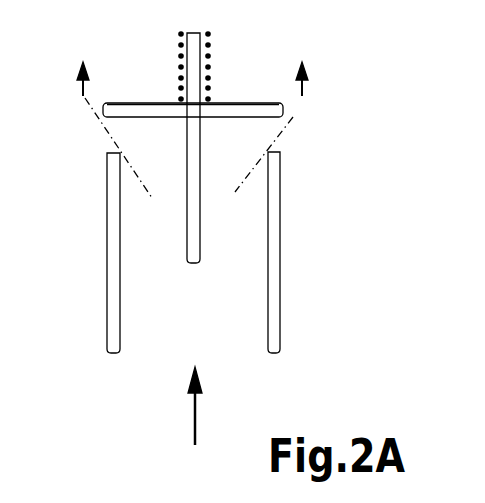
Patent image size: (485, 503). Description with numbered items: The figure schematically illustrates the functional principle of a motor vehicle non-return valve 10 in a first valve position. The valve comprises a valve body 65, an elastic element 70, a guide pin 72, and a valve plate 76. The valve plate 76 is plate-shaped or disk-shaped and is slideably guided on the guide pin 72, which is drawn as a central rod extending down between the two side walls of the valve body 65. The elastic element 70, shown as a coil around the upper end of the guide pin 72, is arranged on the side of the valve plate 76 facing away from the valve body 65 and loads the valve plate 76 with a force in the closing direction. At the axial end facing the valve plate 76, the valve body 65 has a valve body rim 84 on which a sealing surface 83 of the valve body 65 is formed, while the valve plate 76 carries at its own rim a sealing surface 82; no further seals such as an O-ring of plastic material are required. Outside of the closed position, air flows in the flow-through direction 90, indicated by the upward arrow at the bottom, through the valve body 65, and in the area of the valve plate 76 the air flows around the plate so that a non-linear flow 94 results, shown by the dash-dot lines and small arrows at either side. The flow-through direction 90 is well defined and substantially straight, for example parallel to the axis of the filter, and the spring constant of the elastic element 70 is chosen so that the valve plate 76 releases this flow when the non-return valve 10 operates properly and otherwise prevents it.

The motor vehicle non-return valve 10 is at (322, 108).
The valve body 65 is at (281, 277).
The elastic element 70 is at (211, 51).
The guide pin 72 is at (187, 240).
The valve plate 76 is at (137, 108).
The sealing surface of the valve plate 82 is at (116, 118).
The sealing surface of the valve body 83 is at (116, 150).
The valve body rim 84 is at (108, 153).
The flow-through direction 90 is at (193, 423).
The non-linear flow 94 is at (82, 93).